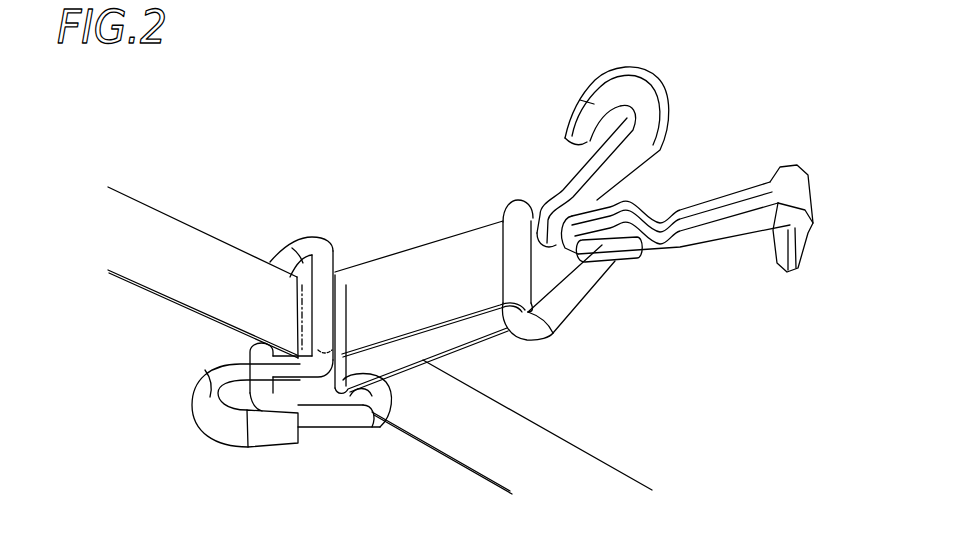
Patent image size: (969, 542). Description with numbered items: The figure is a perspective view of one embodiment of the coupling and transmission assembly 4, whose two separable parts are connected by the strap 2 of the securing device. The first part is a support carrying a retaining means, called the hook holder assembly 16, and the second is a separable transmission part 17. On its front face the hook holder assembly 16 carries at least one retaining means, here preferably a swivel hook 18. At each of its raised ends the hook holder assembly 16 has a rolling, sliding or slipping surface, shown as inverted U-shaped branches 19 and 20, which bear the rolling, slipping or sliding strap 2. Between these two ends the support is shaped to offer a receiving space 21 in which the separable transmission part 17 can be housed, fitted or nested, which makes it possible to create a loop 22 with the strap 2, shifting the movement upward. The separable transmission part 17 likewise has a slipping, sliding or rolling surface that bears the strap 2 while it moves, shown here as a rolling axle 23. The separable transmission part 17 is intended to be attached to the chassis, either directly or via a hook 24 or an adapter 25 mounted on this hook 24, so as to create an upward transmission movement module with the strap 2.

The strap 2 is at (153, 237).
The coupling and transmission assembly 4 is at (335, 93).
The hook holder assembly 16 is at (320, 452).
The separable transmission part 17 is at (517, 178).
The swivel hook 18 is at (218, 428).
The inverted U-shaped branch 19 is at (303, 250).
The inverted U-shaped branch 20 is at (323, 278).
The receiving space 21 is at (358, 243).
The loop 22 is at (488, 243).
The rolling axle 23 is at (513, 325).
The hook 24 is at (655, 113).
The adapter 25 is at (707, 235).